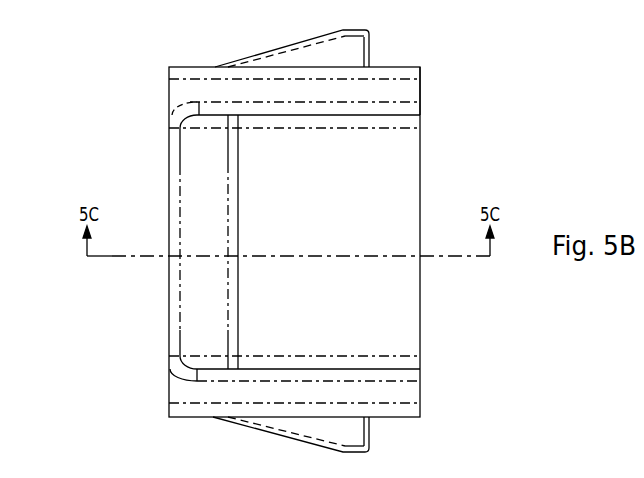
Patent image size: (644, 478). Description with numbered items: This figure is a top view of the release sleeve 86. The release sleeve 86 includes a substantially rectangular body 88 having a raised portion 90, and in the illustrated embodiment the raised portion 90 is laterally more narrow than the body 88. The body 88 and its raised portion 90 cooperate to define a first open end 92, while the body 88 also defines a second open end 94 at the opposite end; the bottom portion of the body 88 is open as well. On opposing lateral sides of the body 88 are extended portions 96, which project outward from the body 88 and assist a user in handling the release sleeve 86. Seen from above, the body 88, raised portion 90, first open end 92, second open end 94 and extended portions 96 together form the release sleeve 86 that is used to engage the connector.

The release sleeve 86 is at (151, 67).
The body 88 is at (395, 67).
The raised portion 90 is at (218, 115).
The first open end 92 is at (421, 155).
The second open end 94 is at (169, 183).
The extended portions 96 is at (297, 55).